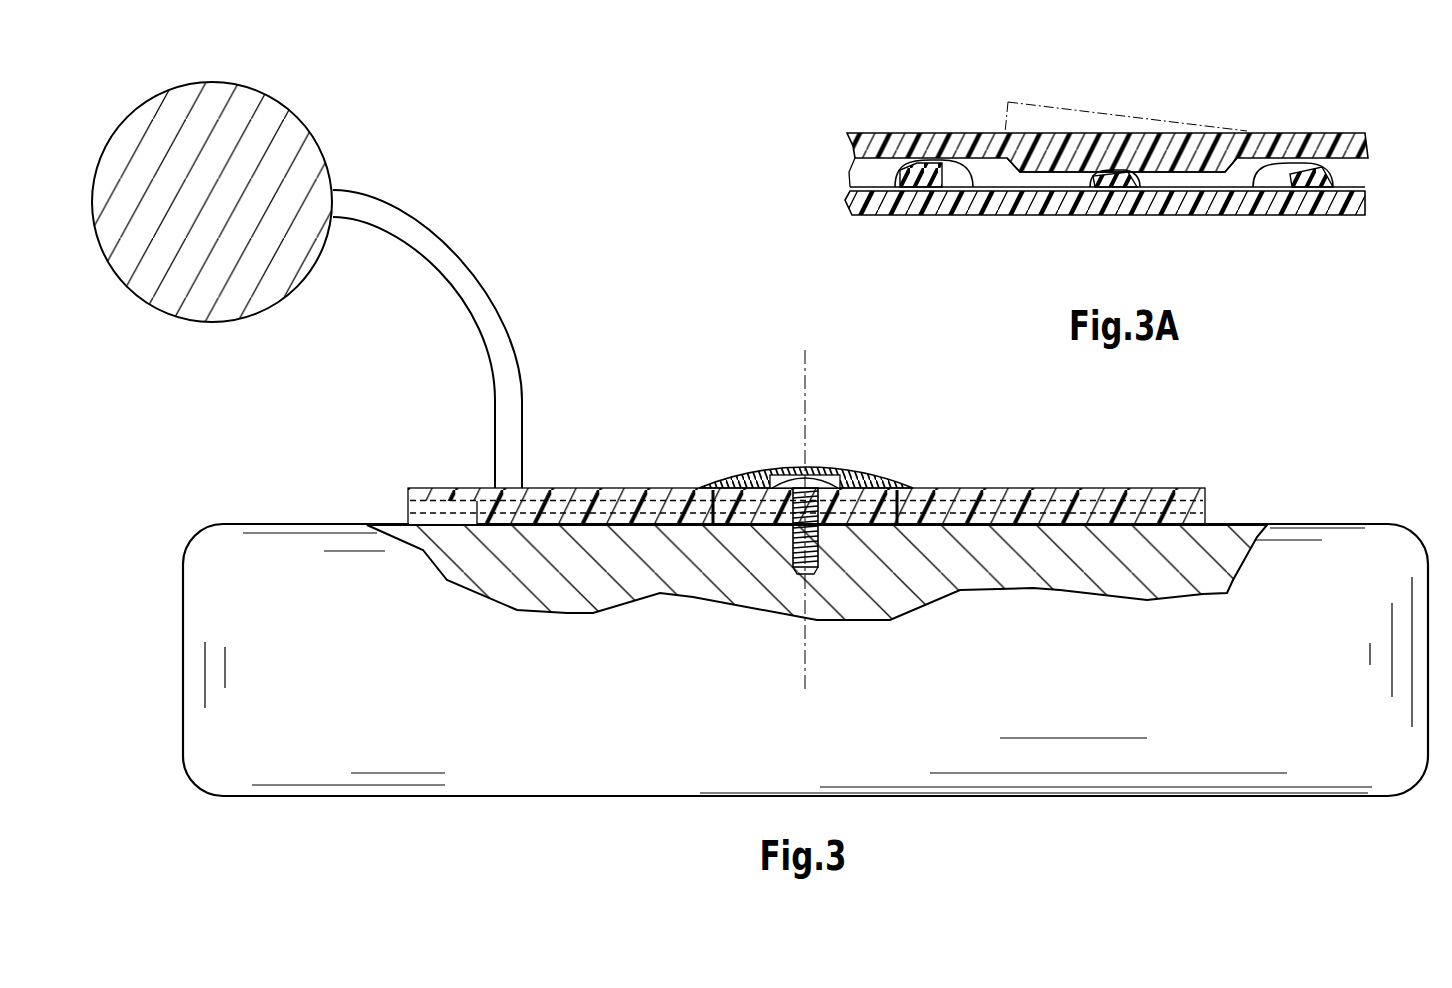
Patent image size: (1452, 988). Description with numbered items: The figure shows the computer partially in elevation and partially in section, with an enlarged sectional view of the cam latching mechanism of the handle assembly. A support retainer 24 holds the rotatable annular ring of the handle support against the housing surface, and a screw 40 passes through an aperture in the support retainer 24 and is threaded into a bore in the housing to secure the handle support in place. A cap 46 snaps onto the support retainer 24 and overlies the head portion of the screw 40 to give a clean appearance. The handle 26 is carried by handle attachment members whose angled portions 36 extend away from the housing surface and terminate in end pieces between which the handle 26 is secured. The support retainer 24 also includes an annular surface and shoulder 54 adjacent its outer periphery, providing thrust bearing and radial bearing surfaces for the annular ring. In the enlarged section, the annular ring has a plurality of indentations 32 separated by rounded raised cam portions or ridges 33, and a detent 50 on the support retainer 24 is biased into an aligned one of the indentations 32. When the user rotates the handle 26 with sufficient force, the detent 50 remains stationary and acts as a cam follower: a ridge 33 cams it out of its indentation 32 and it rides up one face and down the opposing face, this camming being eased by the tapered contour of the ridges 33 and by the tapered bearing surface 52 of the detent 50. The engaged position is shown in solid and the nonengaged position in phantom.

In FIG. 3, the support retainer 24 is at (1018, 489).
In FIG. 3, the handle 26 is at (247, 86).
In FIG. 3, the angled portion 36 is at (440, 253).
In FIG. 3, the screw 40 is at (838, 466).
In FIG. 3, the cap 46 is at (783, 466).
In FIG. 3, the annular surface and shoulder 54 is at (456, 495).
In FIG. 3A, the detent 50 is at (1027, 158).
In FIG. 3A, the bearing surface 52 is at (1020, 172).
In FIG. 3A, the indentations 32 is at (860, 200).
In FIG. 3A, the cam portions or ridges 33 is at (917, 185).